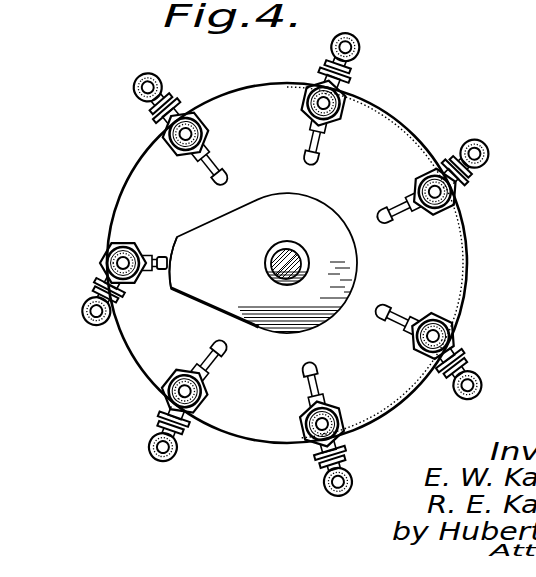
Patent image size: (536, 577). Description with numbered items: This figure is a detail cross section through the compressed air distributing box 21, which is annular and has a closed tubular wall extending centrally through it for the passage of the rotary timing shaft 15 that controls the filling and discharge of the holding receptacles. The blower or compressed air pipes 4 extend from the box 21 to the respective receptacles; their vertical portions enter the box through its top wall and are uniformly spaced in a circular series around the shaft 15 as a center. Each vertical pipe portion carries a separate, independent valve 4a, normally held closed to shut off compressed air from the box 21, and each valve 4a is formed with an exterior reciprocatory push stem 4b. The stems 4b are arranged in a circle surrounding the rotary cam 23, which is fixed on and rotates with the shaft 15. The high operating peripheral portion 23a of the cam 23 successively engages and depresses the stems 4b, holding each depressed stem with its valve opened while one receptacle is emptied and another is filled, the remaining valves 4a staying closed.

The compressed air pipe 4 is at (156, 77).
The valve 4a is at (304, 98).
The push stem 4b is at (300, 368).
The rotary timing shaft 15 is at (292, 283).
The compressed air distributing box 21 is at (287, 263).
The rotary cam 23 is at (313, 201).
The high operating peripheral portion 23a is at (166, 280).